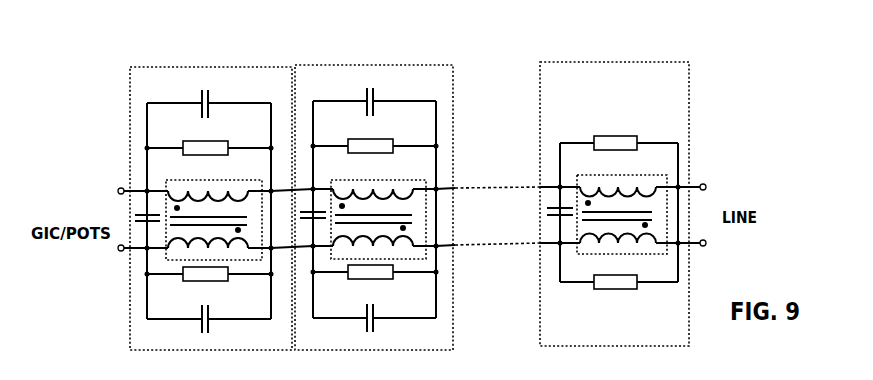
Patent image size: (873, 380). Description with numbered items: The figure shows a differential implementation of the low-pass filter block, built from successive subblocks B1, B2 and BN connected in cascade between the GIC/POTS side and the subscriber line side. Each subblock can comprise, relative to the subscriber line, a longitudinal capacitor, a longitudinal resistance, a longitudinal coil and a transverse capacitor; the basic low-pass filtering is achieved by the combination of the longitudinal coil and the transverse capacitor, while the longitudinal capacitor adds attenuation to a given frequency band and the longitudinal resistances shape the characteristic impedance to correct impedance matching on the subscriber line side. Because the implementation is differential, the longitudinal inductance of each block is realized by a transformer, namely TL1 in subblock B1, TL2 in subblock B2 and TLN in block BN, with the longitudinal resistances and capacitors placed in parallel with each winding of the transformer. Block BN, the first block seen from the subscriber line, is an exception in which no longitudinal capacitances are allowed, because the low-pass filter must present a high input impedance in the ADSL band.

The subblock B1 is at (161, 67).
The subblock B2 is at (336, 66).
The first block seen from the subscriber line BN is at (595, 62).
The transformer TL1 is at (232, 163).
The transformer TL2 is at (396, 161).
The transformer TLN is at (639, 158).